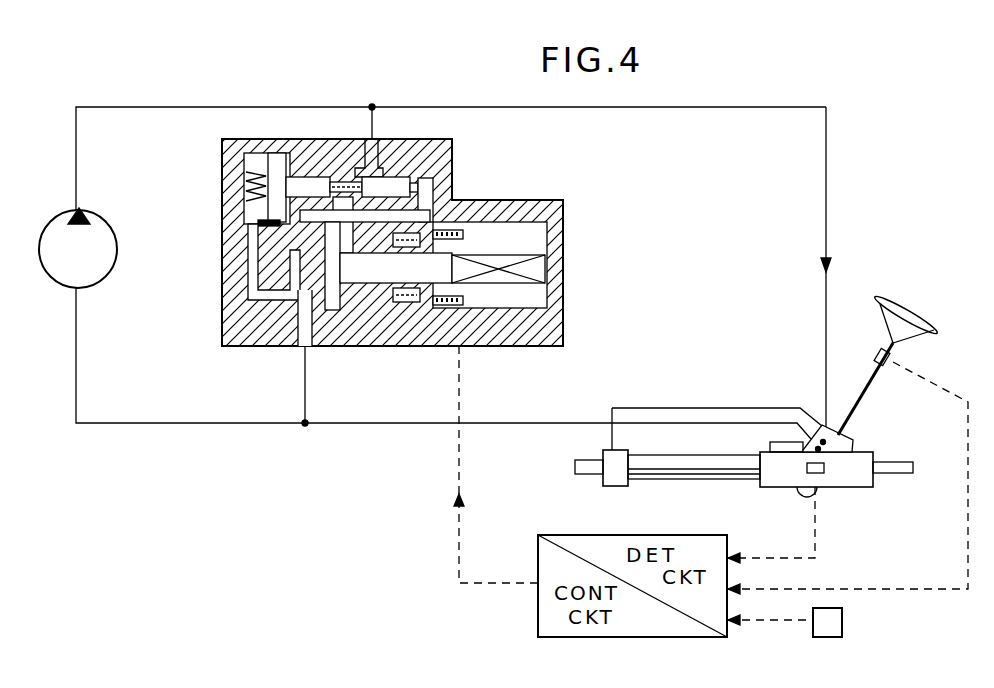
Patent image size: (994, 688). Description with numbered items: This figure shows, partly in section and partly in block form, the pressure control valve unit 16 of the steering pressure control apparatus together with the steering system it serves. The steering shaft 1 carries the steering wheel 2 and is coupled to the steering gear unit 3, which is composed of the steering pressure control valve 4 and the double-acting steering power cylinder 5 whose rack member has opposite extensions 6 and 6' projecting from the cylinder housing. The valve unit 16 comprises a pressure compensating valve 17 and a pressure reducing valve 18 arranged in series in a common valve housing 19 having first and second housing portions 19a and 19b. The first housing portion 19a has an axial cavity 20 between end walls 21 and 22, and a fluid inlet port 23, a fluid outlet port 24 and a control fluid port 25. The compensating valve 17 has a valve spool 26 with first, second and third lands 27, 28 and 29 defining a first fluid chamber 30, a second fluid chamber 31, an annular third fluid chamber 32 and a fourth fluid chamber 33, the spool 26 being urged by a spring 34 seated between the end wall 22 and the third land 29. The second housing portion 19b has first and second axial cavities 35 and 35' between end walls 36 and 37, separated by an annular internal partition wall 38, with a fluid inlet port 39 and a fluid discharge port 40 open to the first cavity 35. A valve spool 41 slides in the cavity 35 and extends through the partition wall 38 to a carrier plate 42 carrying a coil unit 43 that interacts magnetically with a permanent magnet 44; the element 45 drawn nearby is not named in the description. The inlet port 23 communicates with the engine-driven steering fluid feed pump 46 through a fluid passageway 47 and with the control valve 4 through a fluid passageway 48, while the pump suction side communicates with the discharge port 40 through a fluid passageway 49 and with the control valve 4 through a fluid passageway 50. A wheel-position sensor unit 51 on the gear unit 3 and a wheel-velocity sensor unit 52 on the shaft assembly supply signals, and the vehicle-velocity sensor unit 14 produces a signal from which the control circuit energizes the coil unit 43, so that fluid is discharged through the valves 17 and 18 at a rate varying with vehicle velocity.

The steering shaft 1 is at (860, 396).
The steering wheel 2 is at (920, 334).
The steering gear unit 3 is at (840, 496).
The steering pressure control valve 4 is at (853, 440).
The steering power cylinder 5 is at (672, 480).
The rack member extension 6 is at (893, 482).
The rack member extension 6' is at (593, 476).
The vehicle-velocity sensor unit 14 is at (843, 622).
The pressure control valve unit 16 is at (192, 386).
The pressure compensating valve 17 is at (400, 238).
The pressure reducing valve 18 is at (570, 294).
The valve housing 19 is at (222, 342).
The first housing portion 19a is at (453, 170).
The second housing portion 19b is at (564, 337).
The axial cavity 20 is at (420, 178).
The end wall 21 is at (453, 148).
The end wall 22 is at (222, 162).
The fluid inlet port 23 is at (376, 146).
The fluid outlet port 24 is at (334, 224).
The control fluid port 25 is at (226, 246).
The valve spool 26 is at (248, 150).
The first land 27 is at (406, 166).
The second land 28 is at (311, 160).
The third land 29 is at (262, 158).
The first fluid chamber 30 is at (338, 180).
The second fluid chamber 31 is at (436, 196).
The third fluid chamber 32 is at (290, 246).
The fourth fluid chamber 33 is at (244, 226).
The spring 34 is at (246, 190).
The first axial cavity 35 is at (366, 278).
The second axial cavity 35' is at (415, 319).
The end wall 36 is at (226, 292).
The end wall 37 is at (564, 216).
The internal partition wall 38 is at (344, 286).
The fluid inlet port 39 is at (360, 269).
The fluid discharge port 40 is at (296, 306).
The valve spool 41 is at (418, 280).
The carrier plate 42 is at (452, 250).
The coil unit 43 is at (452, 300).
The permanent magnet 44 is at (548, 266).
The rod 45 is at (398, 308).
The steering fluid feed pump 46 is at (100, 215).
The fluid passageway 47 is at (194, 107).
The fluid passageway 48 is at (827, 162).
The fluid passageway 49 is at (242, 424).
The fluid passageway 50 is at (510, 424).
The wheel-position sensor unit 51 is at (800, 488).
The wheel-velocity sensor unit 52 is at (874, 356).